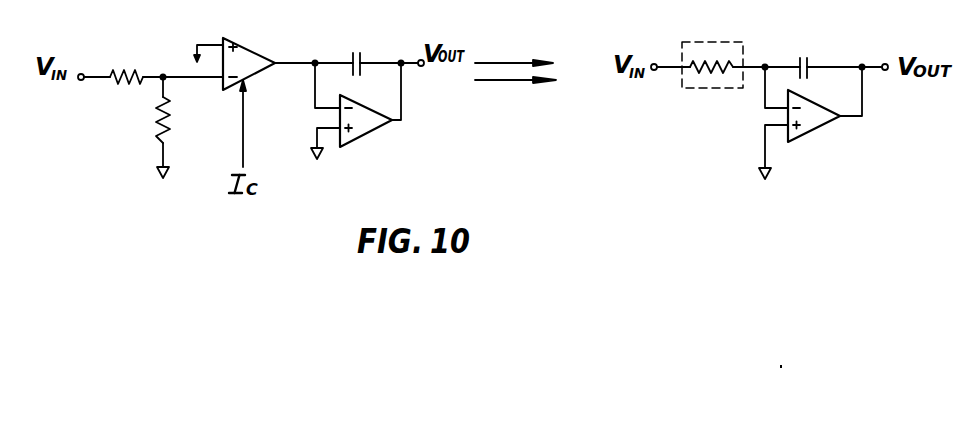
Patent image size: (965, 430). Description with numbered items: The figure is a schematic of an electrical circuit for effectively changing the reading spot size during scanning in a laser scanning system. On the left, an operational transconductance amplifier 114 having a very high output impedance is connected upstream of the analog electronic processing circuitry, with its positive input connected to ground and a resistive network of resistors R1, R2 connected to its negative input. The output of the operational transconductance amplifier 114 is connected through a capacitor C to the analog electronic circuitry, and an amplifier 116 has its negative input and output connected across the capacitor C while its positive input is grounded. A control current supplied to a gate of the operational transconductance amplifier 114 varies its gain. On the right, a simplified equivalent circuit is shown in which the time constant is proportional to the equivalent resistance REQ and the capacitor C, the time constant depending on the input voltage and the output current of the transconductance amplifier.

The operational transconductance amplifier 114 is at (247, 54).
The amplifier 116 is at (369, 127).
The resistor R1 is at (140, 66).
The resistor R2 is at (159, 125).
The capacitor C is at (360, 53).
The equivalent resistance REQ is at (735, 42).